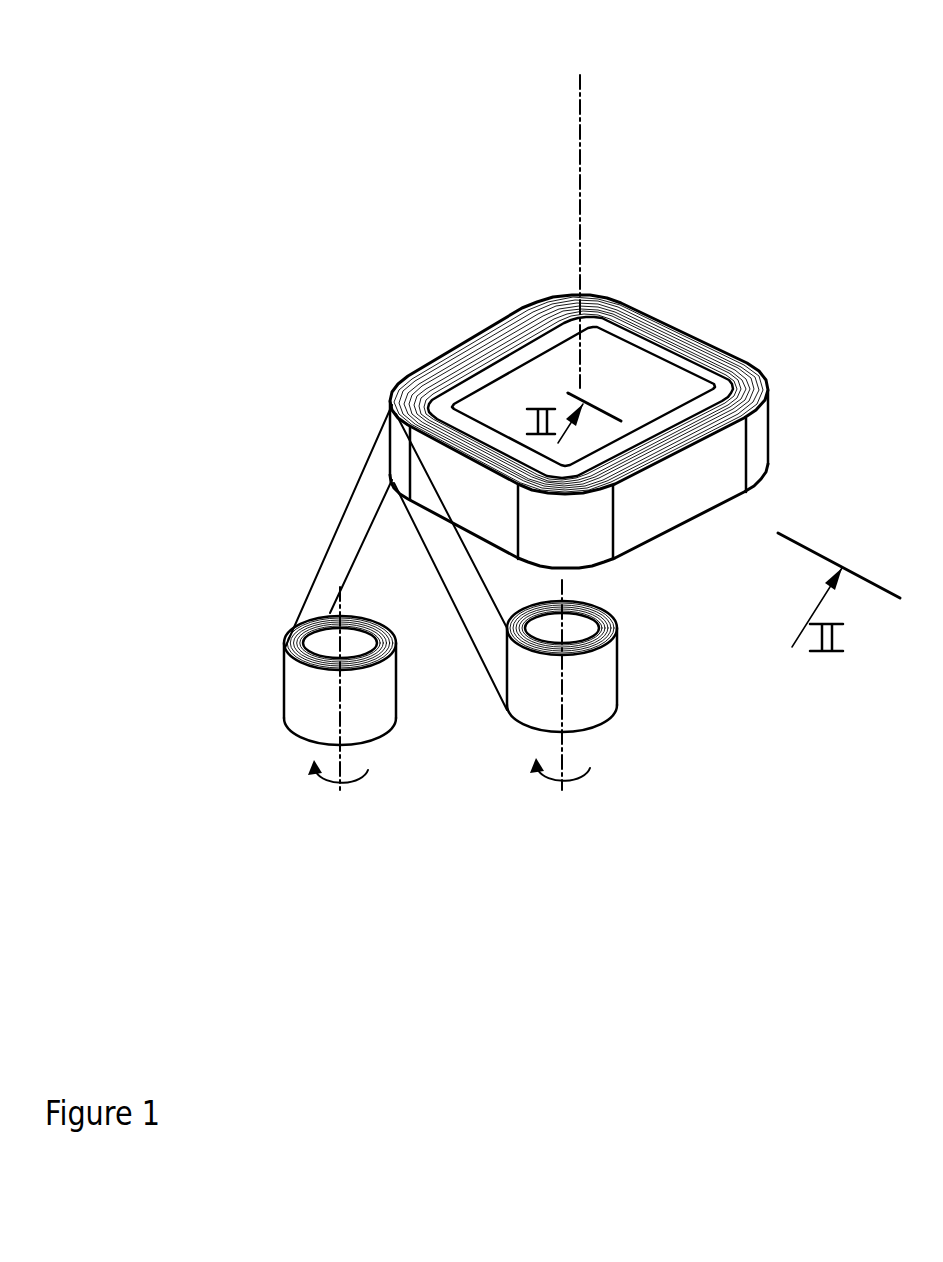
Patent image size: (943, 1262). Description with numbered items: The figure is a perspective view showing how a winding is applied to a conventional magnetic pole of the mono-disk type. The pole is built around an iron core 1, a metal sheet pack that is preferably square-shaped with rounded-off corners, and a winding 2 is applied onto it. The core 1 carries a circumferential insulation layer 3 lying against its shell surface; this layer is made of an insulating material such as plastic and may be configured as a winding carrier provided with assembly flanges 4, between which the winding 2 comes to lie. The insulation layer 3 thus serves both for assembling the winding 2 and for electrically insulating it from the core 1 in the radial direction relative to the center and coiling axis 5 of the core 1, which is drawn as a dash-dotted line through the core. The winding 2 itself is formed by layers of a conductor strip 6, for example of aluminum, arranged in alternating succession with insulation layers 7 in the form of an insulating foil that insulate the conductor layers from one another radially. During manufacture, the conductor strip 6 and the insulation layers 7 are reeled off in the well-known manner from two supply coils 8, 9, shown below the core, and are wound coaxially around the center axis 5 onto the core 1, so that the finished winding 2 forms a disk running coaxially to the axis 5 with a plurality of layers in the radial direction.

The iron core 1 is at (628, 372).
The winding 2 is at (697, 484).
The insulation layer 3 is at (532, 360).
The assembly flanges 4 is at (468, 387).
The center and coiling axis 5 is at (580, 112).
The conductor strip 6 is at (345, 553).
The insulation layers 7 is at (479, 611).
The supply coil 8 is at (320, 717).
The supply coil 9 is at (580, 700).